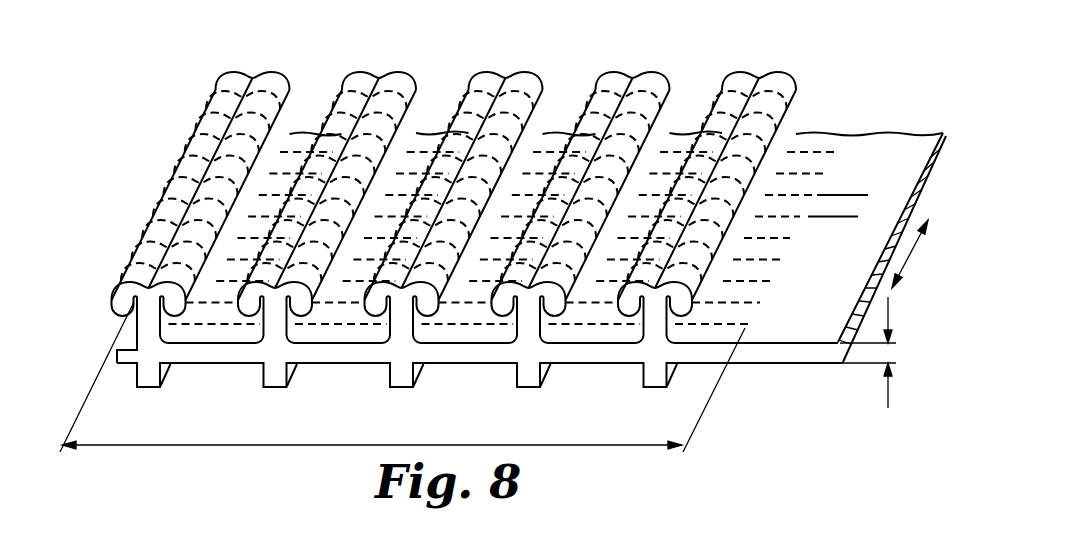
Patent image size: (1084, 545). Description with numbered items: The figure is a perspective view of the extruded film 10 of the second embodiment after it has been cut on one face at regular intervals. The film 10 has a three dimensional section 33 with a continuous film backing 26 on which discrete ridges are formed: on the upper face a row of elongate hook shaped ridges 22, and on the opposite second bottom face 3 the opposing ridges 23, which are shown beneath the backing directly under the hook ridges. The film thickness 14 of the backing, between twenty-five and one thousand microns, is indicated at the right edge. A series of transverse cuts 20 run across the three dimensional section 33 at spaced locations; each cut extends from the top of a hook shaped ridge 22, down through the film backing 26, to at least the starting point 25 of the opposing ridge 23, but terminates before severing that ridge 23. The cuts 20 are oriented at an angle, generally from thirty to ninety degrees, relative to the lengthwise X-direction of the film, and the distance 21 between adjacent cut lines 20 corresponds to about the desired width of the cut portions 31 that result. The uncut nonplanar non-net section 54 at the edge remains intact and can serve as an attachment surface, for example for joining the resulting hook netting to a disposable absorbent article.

The film 10 is at (718, 46).
The film thickness 14 is at (888, 400).
The cut lines 20 is at (820, 150).
The distance between cut lines 21 is at (882, 153).
The hook shaped ridge 22 is at (528, 80).
The opposing ridge 23 is at (398, 386).
The starting point of the opposing ridge 25 is at (388, 373).
The film backing 26 is at (780, 353).
The second bottom face 3 is at (198, 365).
The cut portions 31 is at (790, 82).
The three dimensional section 33 is at (313, 443).
The uncut nonplanar non-net section 54 is at (895, 140).
The X-direction X is at (914, 256).